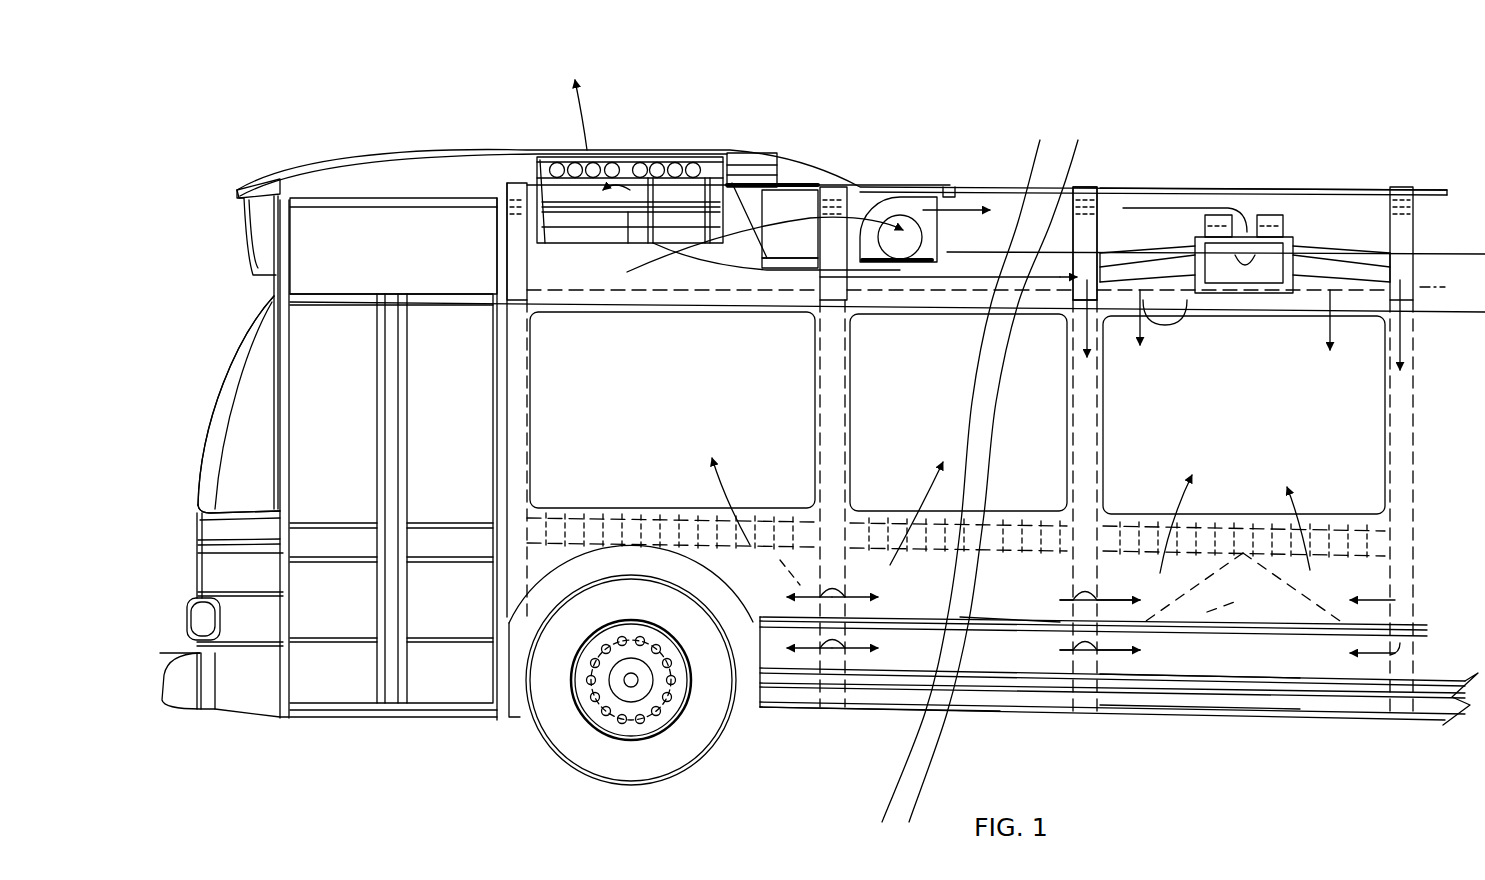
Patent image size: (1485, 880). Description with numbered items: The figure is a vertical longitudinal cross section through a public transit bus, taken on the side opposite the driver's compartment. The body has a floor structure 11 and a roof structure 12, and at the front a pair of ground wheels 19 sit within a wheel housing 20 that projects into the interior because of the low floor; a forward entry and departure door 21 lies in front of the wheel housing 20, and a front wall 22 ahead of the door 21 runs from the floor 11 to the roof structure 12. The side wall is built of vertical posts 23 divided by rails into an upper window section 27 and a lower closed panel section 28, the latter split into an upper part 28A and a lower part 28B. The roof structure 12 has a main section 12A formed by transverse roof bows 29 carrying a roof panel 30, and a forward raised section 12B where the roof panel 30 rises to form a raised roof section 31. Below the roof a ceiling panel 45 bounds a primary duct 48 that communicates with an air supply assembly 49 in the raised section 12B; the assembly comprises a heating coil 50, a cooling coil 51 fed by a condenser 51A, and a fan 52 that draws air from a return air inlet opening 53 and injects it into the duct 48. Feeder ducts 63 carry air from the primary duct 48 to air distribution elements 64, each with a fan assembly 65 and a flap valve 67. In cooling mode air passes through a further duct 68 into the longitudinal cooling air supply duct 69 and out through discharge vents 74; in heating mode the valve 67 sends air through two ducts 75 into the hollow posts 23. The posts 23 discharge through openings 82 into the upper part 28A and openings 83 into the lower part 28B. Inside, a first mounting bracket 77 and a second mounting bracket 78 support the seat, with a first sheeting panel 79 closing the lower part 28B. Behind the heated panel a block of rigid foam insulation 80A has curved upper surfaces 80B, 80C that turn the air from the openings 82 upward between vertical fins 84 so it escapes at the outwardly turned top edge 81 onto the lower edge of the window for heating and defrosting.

The floor structure 11 is at (867, 710).
The roof structure 12 is at (950, 187).
The main section of the roof 12A is at (1163, 178).
The raised section of the roof 12B is at (700, 150).
The ground wheels 19 is at (702, 748).
The wheel housing 20 is at (758, 613).
The forward entry and departure door 21 is at (267, 407).
The front wall 22 is at (202, 530).
The vertical posts 23 is at (1100, 430).
The upper window section 27 is at (1036, 423).
The lower closed panel section 28 is at (1010, 588).
The upper part of the lower panel section 28A is at (1083, 583).
The lower part of the lower panel section 28B is at (1053, 649).
The transverse roof bows 29 is at (1088, 190).
The roof panel 30 is at (1440, 187).
The raised roof section 31 is at (603, 147).
The ceiling panel 45 is at (1051, 275).
The primary duct 48 is at (1003, 200).
The air supply assembly 49 is at (747, 140).
The heating coil 50 is at (785, 185).
The cooling coil 51 is at (757, 207).
The condenser 51A is at (627, 157).
The fan 52 is at (892, 195).
The return air inlet opening 53 is at (722, 260).
The feeder ducts 63 is at (1290, 237).
The air distribution elements 64 is at (1335, 217).
The fan assembly 65 is at (1218, 215).
The flap valve 67 is at (1233, 300).
The further duct 68 is at (1260, 300).
The cooling air supply duct 69 is at (1130, 300).
The discharge vents 74 is at (1187, 307).
The ducts 75 is at (1320, 250).
The first mounting bracket 77 is at (1255, 590).
The second mounting bracket 78 is at (1193, 697).
The first sheeting panel 79 is at (1260, 667).
The block of rigid foam insulation 80A is at (1207, 607).
The curved upper surface 80B is at (1285, 600).
The curved upper surface 80C is at (1218, 580).
The outwardly turned top edge 81 is at (1250, 520).
The discharge openings 82 is at (1060, 600).
The discharge openings 83 is at (1073, 652).
The vertical fins 84 is at (1148, 520).